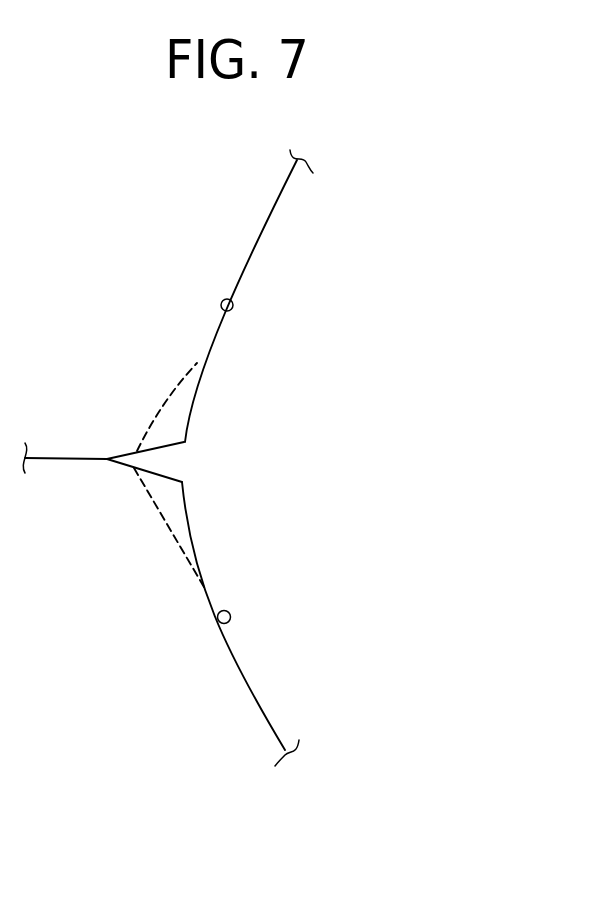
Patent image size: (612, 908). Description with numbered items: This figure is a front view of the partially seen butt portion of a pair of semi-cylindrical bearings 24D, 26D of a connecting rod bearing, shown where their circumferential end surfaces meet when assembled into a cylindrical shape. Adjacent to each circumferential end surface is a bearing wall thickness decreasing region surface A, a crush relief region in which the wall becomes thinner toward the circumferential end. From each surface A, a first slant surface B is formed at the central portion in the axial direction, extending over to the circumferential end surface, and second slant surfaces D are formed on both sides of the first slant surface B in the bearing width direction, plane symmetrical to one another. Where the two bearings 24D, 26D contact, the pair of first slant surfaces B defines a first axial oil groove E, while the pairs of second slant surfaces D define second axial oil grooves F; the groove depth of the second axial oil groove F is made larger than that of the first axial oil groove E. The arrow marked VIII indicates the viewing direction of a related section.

The semi-cylindrical bearing 24D is at (270, 203).
The semi-cylindrical bearing 26D is at (248, 712).
The bearing wall thickness decreasing region surface A is at (219, 302).
The first slant surface B is at (185, 400).
The second slant surface D is at (167, 447).
The first axial oil groove E is at (165, 500).
The second axial oil groove F is at (128, 461).
The section view indicator VIII is at (332, 462).